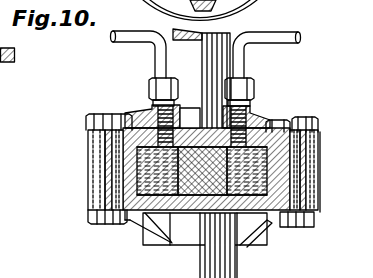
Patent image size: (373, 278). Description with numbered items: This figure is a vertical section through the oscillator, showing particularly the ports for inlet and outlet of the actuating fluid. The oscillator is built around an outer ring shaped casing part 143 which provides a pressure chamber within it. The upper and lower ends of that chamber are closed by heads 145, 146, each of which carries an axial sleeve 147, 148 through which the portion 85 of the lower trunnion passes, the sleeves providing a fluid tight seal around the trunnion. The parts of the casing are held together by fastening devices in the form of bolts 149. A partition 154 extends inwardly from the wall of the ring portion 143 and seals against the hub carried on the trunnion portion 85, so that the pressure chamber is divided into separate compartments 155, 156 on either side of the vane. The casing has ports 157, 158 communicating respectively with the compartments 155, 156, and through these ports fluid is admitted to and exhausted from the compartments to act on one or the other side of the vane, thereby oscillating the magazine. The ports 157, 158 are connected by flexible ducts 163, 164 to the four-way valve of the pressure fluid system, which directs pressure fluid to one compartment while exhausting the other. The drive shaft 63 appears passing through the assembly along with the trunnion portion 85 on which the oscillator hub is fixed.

The drive shaft 63 is at (242, 62).
The trunnion portion 85 is at (231, 268).
The ring shaped casing part 143 is at (90, 172).
The head 145 is at (274, 119).
The head 146 is at (270, 237).
The axial sleeve 147 is at (150, 88).
The axial sleeve 148 is at (178, 231).
The bolts 149 is at (99, 222).
The partition 154 is at (133, 235).
The compartment 155 is at (147, 169).
The compartment 156 is at (314, 131).
The port 157 is at (90, 128).
The port 158 is at (253, 110).
The flexible duct 163 is at (112, 42).
The flexible duct 164 is at (299, 41).